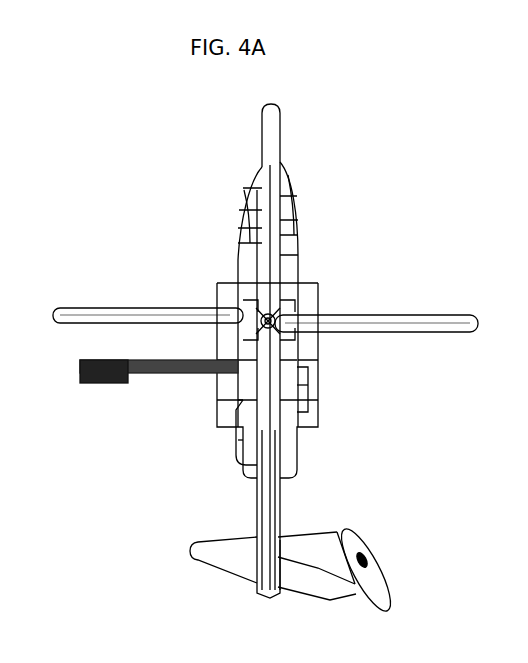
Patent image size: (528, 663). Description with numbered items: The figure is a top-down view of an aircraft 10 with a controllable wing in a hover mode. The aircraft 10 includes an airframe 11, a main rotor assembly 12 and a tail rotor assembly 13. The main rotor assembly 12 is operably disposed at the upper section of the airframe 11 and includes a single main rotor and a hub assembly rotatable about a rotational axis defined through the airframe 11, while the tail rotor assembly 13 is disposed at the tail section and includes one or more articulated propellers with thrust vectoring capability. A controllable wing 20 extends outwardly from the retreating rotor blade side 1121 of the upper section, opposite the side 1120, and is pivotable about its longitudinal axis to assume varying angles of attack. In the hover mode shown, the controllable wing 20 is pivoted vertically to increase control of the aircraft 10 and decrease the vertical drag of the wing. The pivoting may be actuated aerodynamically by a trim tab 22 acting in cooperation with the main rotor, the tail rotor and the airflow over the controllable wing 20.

The aircraft 10 is at (175, 240).
The airframe 11 is at (247, 293).
The main rotor assembly 12 is at (270, 322).
The tail rotor assembly 13 is at (308, 577).
The controllable wing 20 is at (170, 371).
The trim tab 22 is at (98, 378).
The right pod of fuselage 1120 is at (303, 417).
The retreating rotor blade side 1121 is at (247, 463).